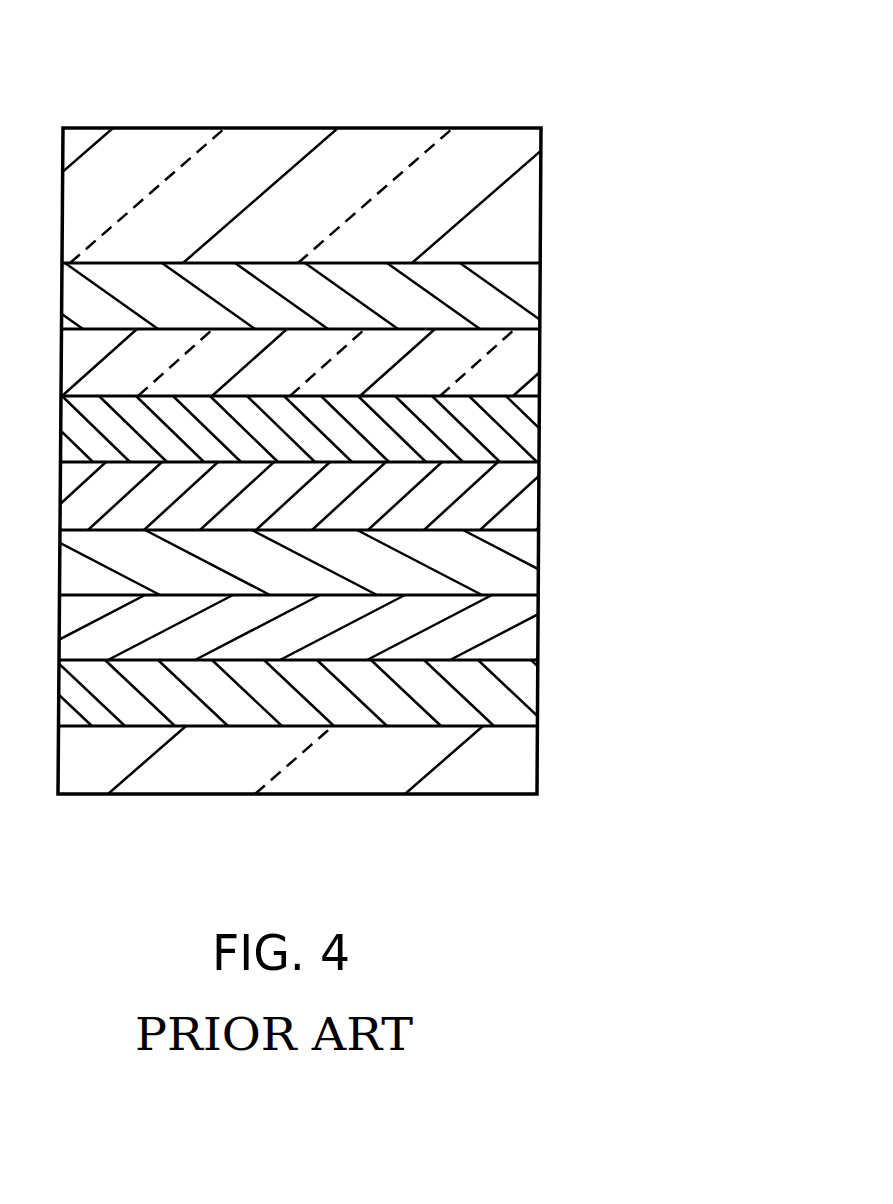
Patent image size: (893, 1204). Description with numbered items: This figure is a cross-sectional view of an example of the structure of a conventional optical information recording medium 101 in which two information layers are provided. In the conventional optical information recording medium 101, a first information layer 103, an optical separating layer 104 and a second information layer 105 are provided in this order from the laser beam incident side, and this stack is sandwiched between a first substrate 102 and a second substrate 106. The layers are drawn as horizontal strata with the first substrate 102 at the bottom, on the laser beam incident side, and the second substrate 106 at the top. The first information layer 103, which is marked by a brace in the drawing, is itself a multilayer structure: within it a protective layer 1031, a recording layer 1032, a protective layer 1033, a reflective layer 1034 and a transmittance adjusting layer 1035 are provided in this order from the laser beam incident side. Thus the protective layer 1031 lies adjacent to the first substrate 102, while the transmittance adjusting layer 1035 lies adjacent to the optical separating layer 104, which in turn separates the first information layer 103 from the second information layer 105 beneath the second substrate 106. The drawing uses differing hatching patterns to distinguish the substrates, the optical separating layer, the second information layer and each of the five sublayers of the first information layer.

The conventional optical information recording medium 101 is at (390, 124).
The first substrate 102 is at (530, 768).
The first information layer 103 is at (418, 558).
The protective layer 1031 is at (363, 693).
The recording layer 1032 is at (530, 631).
The protective layer 1033 is at (530, 566).
The reflective layer 1034 is at (530, 494).
The transmittance adjusting layer 1035 is at (530, 428).
The optical separating layer 104 is at (530, 363).
The second information layer 105 is at (530, 298).
The second substrate 106 is at (530, 201).